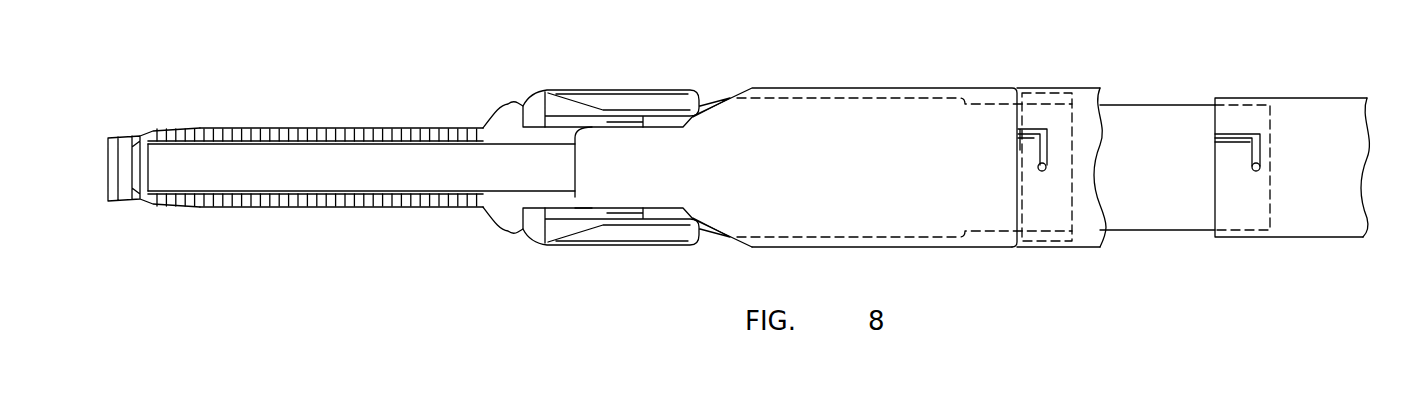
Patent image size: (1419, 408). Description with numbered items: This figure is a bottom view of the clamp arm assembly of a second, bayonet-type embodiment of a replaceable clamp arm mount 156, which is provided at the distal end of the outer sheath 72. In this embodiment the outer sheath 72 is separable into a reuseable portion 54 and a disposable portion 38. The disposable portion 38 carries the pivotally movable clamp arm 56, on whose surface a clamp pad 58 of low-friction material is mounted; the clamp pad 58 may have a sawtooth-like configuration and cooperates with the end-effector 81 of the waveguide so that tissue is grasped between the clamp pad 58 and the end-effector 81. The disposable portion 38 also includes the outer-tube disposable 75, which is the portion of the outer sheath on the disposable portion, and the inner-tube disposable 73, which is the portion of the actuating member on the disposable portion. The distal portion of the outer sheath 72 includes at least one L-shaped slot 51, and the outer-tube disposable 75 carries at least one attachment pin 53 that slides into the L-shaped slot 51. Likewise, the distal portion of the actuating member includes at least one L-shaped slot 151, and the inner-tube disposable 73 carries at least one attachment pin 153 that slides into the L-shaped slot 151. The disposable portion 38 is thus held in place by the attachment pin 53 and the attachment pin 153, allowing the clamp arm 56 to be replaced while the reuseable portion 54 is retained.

The clamp arm 56 is at (302, 86).
The clamp pad 58 is at (188, 204).
The end-effector 81 is at (341, 172).
The disposable portion 38 is at (708, 245).
The clamp arm mount 156 is at (803, 86).
The outer-tube disposable 75 is at (970, 250).
The outer sheath 72 is at (1087, 243).
The L-shaped slot 51 is at (1042, 153).
The attachment pin 53 is at (1040, 172).
The inner-tube disposable 73 is at (1177, 112).
The reuseable portion 54 is at (1316, 248).
The L-shaped slot 151 is at (1260, 150).
The attachment pin 153 is at (1253, 171).